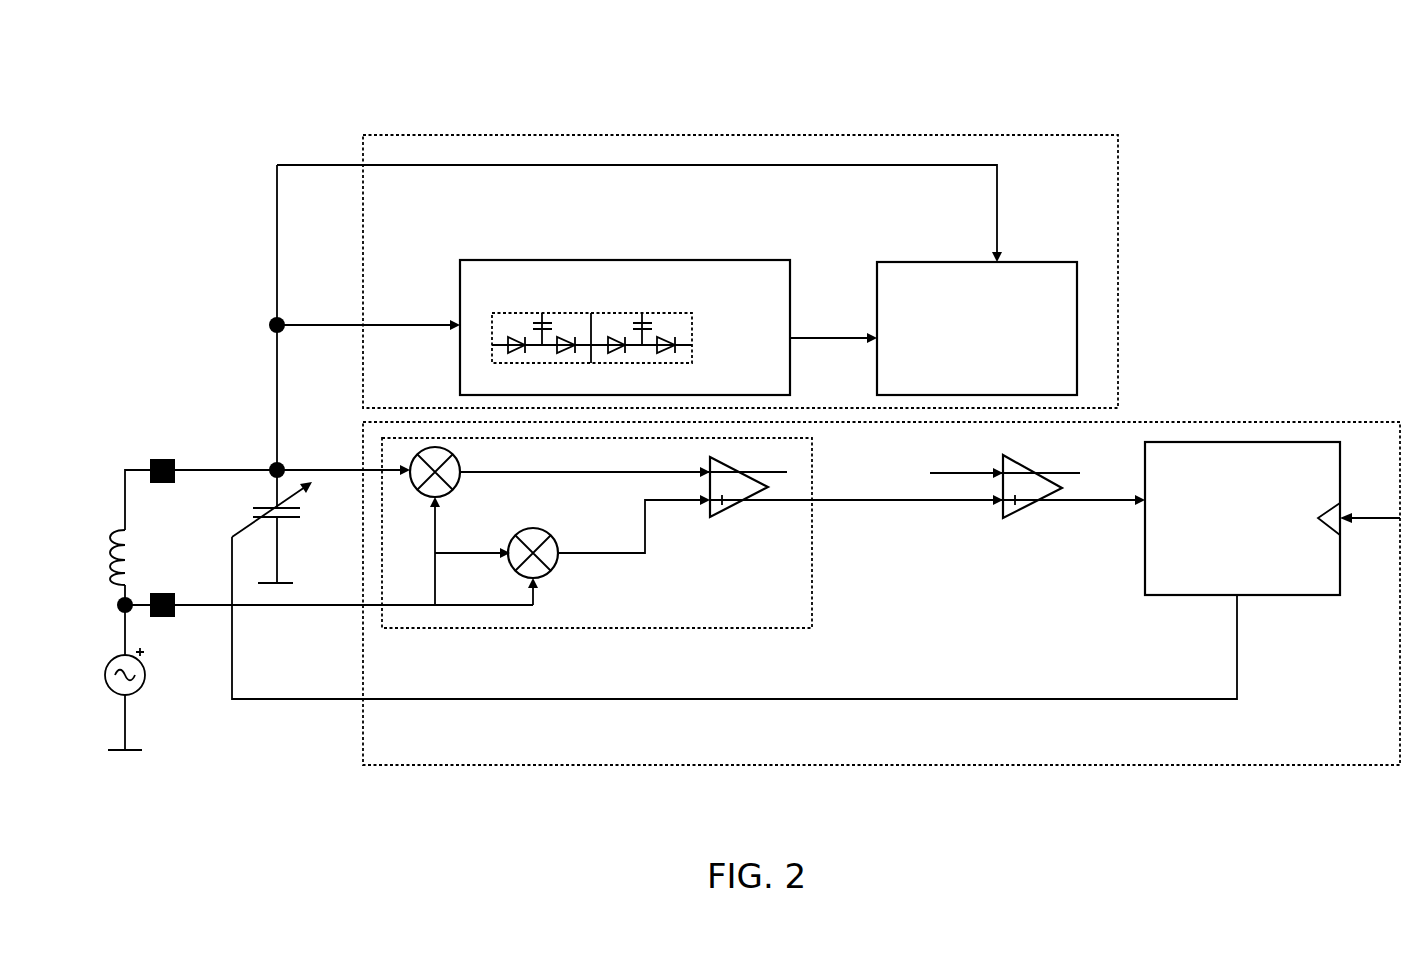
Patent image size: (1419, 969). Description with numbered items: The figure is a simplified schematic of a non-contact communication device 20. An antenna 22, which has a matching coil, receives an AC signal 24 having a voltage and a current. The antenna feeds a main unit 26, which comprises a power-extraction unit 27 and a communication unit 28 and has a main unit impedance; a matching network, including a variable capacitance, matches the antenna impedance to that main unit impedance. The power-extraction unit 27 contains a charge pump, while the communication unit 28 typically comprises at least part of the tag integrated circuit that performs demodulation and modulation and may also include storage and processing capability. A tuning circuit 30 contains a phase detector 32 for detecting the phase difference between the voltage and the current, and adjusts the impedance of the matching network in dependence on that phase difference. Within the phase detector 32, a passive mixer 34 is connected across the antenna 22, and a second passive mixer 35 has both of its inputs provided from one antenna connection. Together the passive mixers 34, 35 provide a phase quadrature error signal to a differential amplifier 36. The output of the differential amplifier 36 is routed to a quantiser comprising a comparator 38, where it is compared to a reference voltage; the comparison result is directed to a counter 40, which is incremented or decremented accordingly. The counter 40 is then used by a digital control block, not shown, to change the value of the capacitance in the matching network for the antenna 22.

The non-contact communication device 20 is at (361, 112).
The antenna 22 is at (93, 489).
The AC signal 24 is at (93, 679).
The main unit 26 is at (1087, 204).
The power-extraction unit 27 is at (747, 344).
The communication unit 28 is at (983, 352).
The tuning circuit 30 is at (1350, 744).
The phase detector 32 is at (775, 619).
The passive mixer 34 is at (422, 493).
The second passive mixer 35 is at (547, 577).
The differential amplifier 36 is at (710, 520).
The comparator 38 is at (1010, 520).
The counter 40 is at (1248, 539).